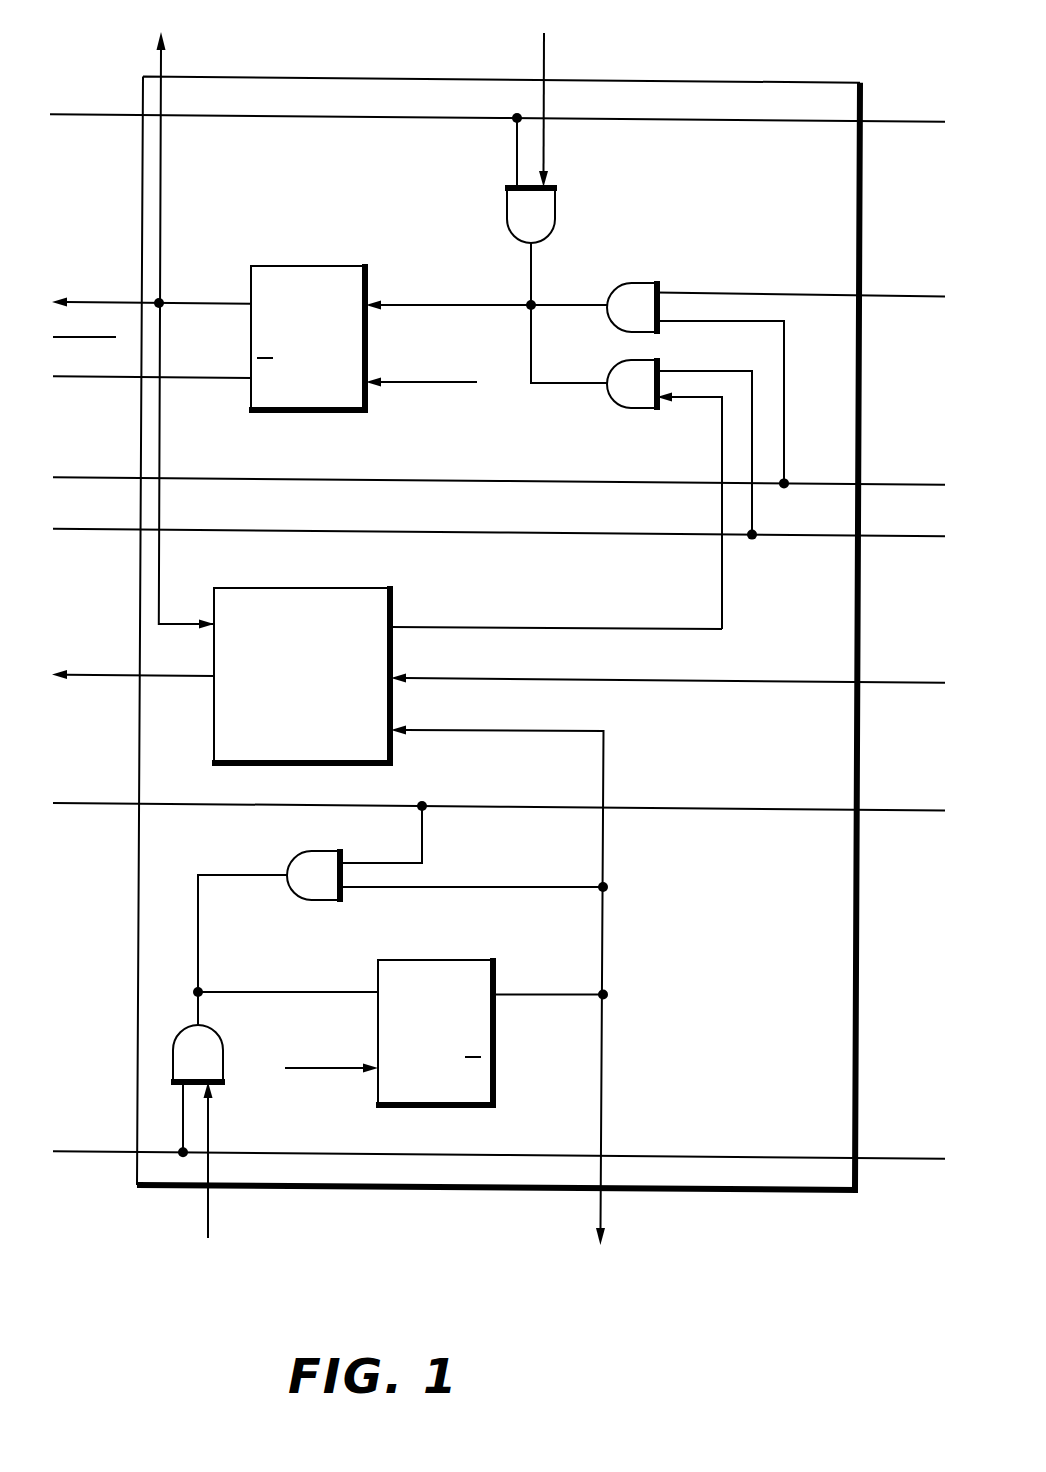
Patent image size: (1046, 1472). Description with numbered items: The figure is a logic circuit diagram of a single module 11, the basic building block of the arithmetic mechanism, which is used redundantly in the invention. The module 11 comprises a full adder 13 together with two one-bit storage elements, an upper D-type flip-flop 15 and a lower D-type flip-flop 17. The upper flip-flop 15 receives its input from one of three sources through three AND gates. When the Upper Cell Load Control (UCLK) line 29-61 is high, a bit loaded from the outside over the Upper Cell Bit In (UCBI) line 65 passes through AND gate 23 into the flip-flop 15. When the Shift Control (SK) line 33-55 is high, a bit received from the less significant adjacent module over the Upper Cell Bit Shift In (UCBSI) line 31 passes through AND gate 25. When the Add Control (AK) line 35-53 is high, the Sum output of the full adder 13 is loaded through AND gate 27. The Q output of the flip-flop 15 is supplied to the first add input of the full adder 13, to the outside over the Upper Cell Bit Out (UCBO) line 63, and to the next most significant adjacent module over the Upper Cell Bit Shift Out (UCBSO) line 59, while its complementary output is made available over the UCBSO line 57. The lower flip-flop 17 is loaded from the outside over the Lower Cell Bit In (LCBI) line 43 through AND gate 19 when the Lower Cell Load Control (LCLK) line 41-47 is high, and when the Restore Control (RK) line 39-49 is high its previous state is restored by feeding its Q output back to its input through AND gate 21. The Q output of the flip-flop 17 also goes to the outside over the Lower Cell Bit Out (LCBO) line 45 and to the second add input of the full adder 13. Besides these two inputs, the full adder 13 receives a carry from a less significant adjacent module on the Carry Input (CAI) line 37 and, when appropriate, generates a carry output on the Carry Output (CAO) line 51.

The module 11 is at (758, 82).
The full adder 13 is at (395, 590).
The upper one bit storage element 15 is at (291, 266).
The lower one bit storage element 17 is at (493, 1043).
The AND gate 19 is at (223, 1062).
The AND gate 21 is at (292, 856).
The AND gate 23 is at (507, 200).
The AND gate 25 is at (645, 283).
The AND gate 27 is at (640, 408).
The Upper Cell Load Control (UCLK) line 29 is at (908, 123).
The Upper Cell Bit Shift In (UCBSI) line 31 is at (890, 298).
The Shift Control (SK) line 33 is at (922, 484).
The Add Control (AK) line 35 is at (925, 538).
The Carry Input (CAI) line 37 is at (908, 684).
The Restore Control (RK) line 39 is at (908, 811).
The Lower Cell Load Control (LCLK) line 41 is at (915, 1160).
The Lower Cell Bit In (LCBI) line 43 is at (207, 1240).
The Lower Cell Bit Out (LCBO) line 45 is at (600, 1240).
The Lower Cell Load Control (LCLK) line 47 is at (100, 1156).
The Restore Control (RK) line 49 is at (97, 806).
The Carry Output (CAO) line 51 is at (98, 677).
The Add Control (AK) line 53 is at (100, 531).
The Shift Control (SK) line 55 is at (120, 477).
The UCBSO line 57 is at (95, 379).
The Upper Cell Bit Shift Out (UCBSO) line 59 is at (128, 302).
The Upper Cell Load Control (UCLK) line 61 is at (102, 117).
The Upper Cell Bit Out (UCBO) line 63 is at (159, 40).
The Upper Cell Bit In (UCBI) line 65 is at (544, 48).